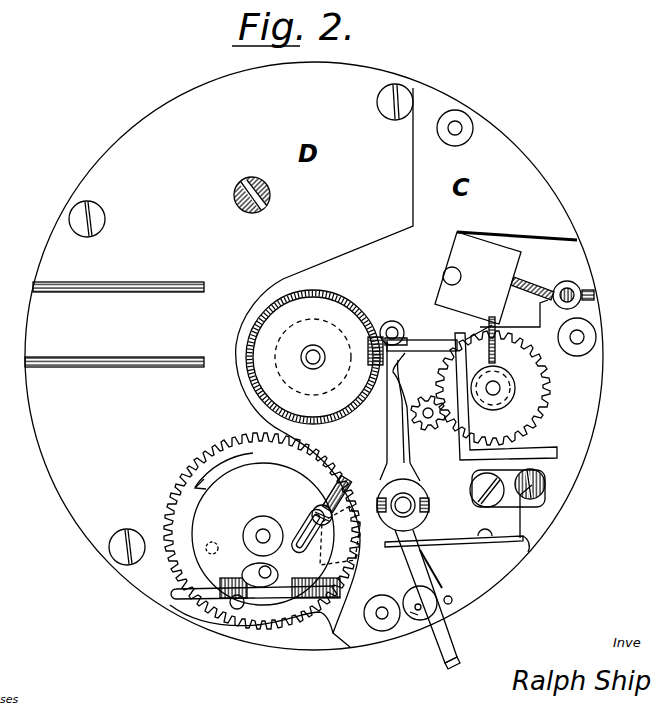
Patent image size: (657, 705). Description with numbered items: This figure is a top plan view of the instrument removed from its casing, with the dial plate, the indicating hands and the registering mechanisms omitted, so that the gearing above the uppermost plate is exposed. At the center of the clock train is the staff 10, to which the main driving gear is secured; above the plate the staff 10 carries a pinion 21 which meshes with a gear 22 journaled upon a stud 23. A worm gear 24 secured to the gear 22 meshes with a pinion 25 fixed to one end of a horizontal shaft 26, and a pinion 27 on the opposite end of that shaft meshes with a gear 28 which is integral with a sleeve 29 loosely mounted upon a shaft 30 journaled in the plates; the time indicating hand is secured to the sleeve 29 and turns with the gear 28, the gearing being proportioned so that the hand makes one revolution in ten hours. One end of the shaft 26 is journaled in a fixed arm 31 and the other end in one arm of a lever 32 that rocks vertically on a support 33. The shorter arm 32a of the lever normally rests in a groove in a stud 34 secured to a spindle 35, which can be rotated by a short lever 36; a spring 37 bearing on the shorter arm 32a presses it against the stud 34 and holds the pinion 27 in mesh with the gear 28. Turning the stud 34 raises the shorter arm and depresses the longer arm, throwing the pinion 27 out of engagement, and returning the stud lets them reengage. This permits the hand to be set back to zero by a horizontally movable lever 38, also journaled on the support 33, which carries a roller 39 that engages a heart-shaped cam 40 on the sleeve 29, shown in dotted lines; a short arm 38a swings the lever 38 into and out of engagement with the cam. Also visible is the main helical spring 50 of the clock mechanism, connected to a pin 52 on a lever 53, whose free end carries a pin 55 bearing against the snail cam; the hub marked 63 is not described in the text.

The staff 10 is at (428, 421).
The pinion 21 is at (425, 403).
The gear 22 is at (537, 320).
The stud 23 is at (500, 391).
The worm gear 24 is at (513, 383).
The pinion 25 is at (492, 318).
The horizontal shaft 26 is at (416, 351).
The pinion 27 is at (372, 336).
The gear 28 is at (253, 371).
The sleeve 29 is at (320, 366).
The shaft 30 is at (311, 349).
The fixed arm 31 is at (468, 424).
The lever 32 is at (400, 475).
The shorter arm 32a is at (411, 571).
The support 33 is at (417, 508).
The stud 34 is at (453, 601).
The spindle 35 is at (425, 610).
The short lever 36 is at (458, 660).
The spring 37 is at (528, 545).
The horizontally movable lever 38 is at (388, 452).
The short arm 38a is at (445, 572).
The roller 39 is at (392, 321).
The heart-shaped cam 40 is at (262, 312).
The helical spring 50 is at (320, 505).
The pin 52 is at (312, 512).
The lever 53 is at (327, 537).
The pin 55 is at (263, 580).
The wheel hub 63 is at (297, 518).